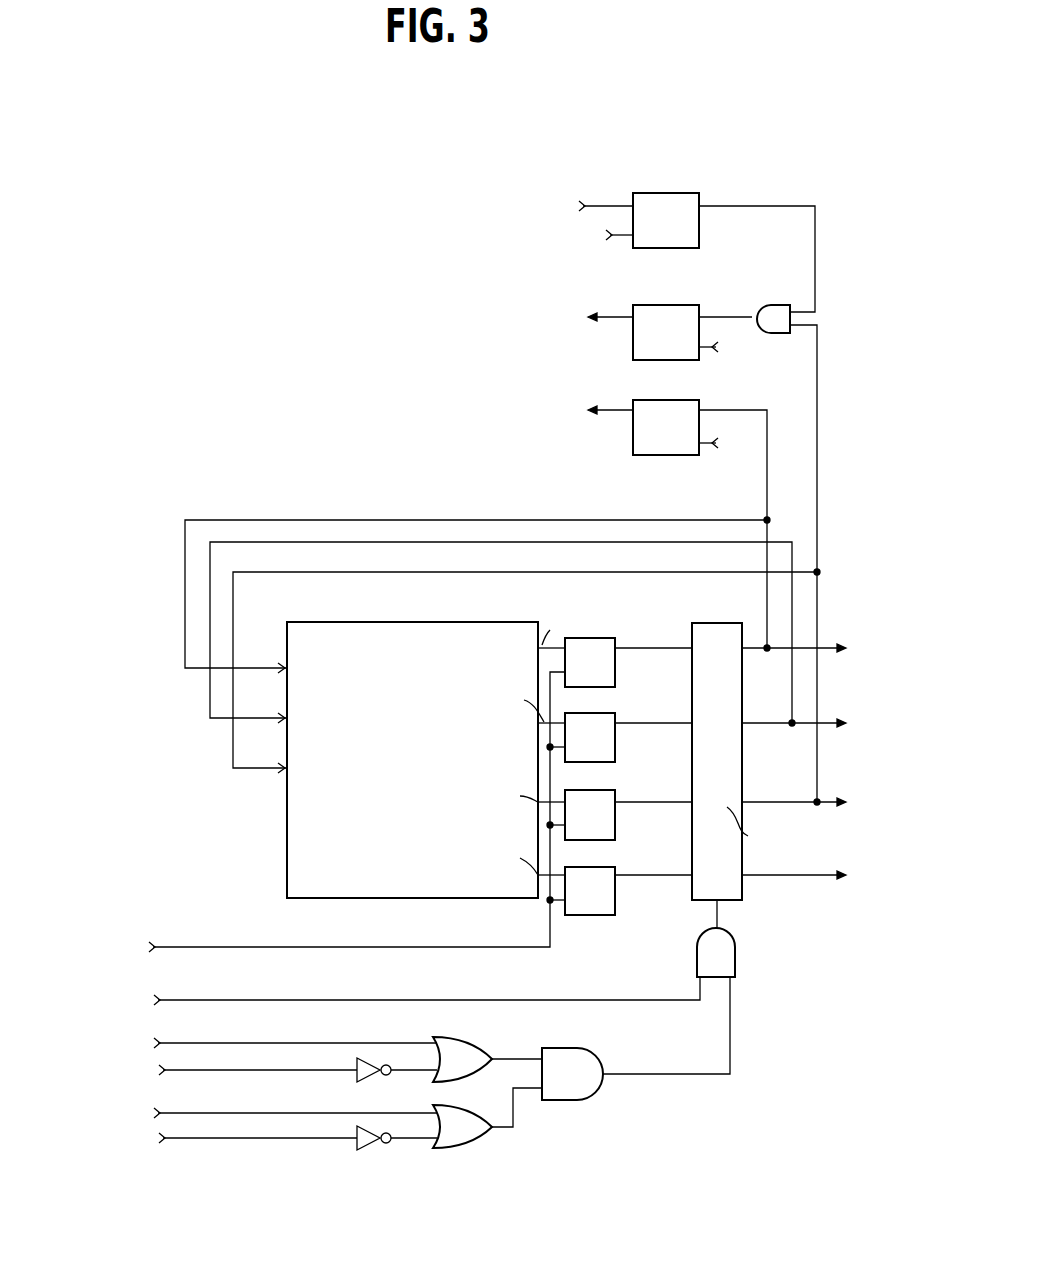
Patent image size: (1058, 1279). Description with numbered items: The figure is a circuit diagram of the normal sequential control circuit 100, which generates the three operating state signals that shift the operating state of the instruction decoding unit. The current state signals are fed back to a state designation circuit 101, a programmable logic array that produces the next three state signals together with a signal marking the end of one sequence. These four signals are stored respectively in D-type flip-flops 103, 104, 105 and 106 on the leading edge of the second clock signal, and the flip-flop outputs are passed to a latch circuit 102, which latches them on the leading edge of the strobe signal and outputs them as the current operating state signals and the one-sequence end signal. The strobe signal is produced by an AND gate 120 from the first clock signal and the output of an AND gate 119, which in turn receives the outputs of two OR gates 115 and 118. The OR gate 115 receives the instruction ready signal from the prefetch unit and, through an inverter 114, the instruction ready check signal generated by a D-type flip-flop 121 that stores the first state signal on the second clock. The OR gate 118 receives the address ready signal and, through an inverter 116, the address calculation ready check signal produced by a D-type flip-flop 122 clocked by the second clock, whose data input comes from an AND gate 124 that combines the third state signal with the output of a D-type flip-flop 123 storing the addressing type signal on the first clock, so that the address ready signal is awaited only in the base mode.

The normal sequential control circuit 100 is at (452, 488).
The state designation circuit 101 is at (512, 622).
The latch circuit 102 is at (725, 623).
The D-type flip-flop 103 is at (598, 638).
The D-type flip-flop 104 is at (615, 713).
The D-type flip-flop 105 is at (615, 790).
The D-type flip-flop 106 is at (615, 867).
The inverter 114 is at (376, 1079).
The OR gate 115 is at (482, 1040).
The inverter 116 is at (376, 1148).
The OR gate 118 is at (488, 1137).
The AND gate 119 is at (610, 1066).
The AND gate 120 is at (735, 960).
The D-type flip-flop 121 is at (658, 455).
The D-type flip-flop 122 is at (663, 305).
The D-type flip-flop 123 is at (699, 240).
The AND gate 124 is at (767, 305).